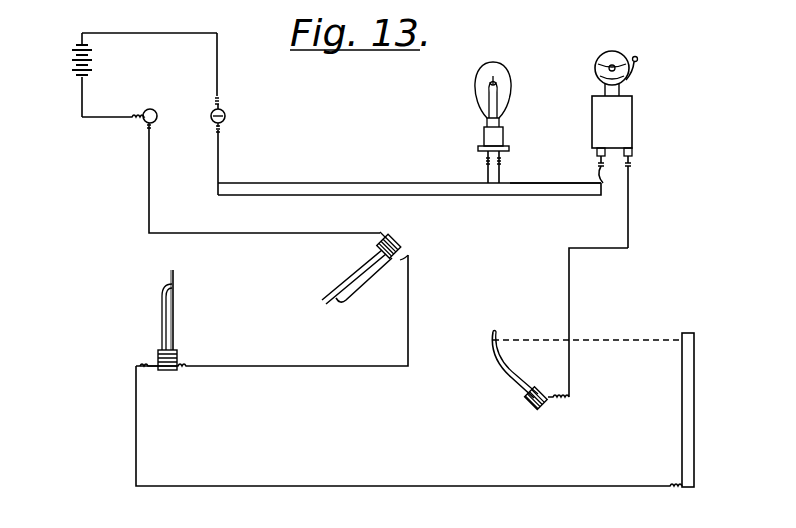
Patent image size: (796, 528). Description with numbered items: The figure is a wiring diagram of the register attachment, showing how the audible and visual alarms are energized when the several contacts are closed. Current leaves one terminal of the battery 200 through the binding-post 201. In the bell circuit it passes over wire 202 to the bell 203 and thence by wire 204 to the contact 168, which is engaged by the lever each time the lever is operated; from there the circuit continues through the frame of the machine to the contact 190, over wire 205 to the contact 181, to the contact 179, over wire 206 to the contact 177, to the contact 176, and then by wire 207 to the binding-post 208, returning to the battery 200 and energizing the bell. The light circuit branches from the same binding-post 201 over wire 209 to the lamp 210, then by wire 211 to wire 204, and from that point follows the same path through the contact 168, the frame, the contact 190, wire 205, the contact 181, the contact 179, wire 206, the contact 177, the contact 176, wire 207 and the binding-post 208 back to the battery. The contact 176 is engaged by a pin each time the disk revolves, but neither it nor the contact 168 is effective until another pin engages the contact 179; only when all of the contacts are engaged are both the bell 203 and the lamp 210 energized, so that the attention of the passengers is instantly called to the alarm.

The battery 200 is at (119, 75).
The binding-post 201 is at (228, 116).
The wire 202 is at (300, 196).
The bell 203 is at (621, 121).
The wire 204 is at (600, 250).
The wire 205 is at (490, 489).
The wire 206 is at (260, 377).
The wire 207 is at (222, 236).
The binding-post 208 is at (144, 120).
The wire 209 is at (343, 189).
The lamp 210 is at (483, 135).
The wire 211 is at (526, 183).
The contact 168 is at (498, 373).
The contact 176 is at (342, 280).
The contact 177 is at (366, 290).
The contact 179 is at (176, 322).
The contact 181 is at (160, 327).
The contact 190 is at (690, 408).